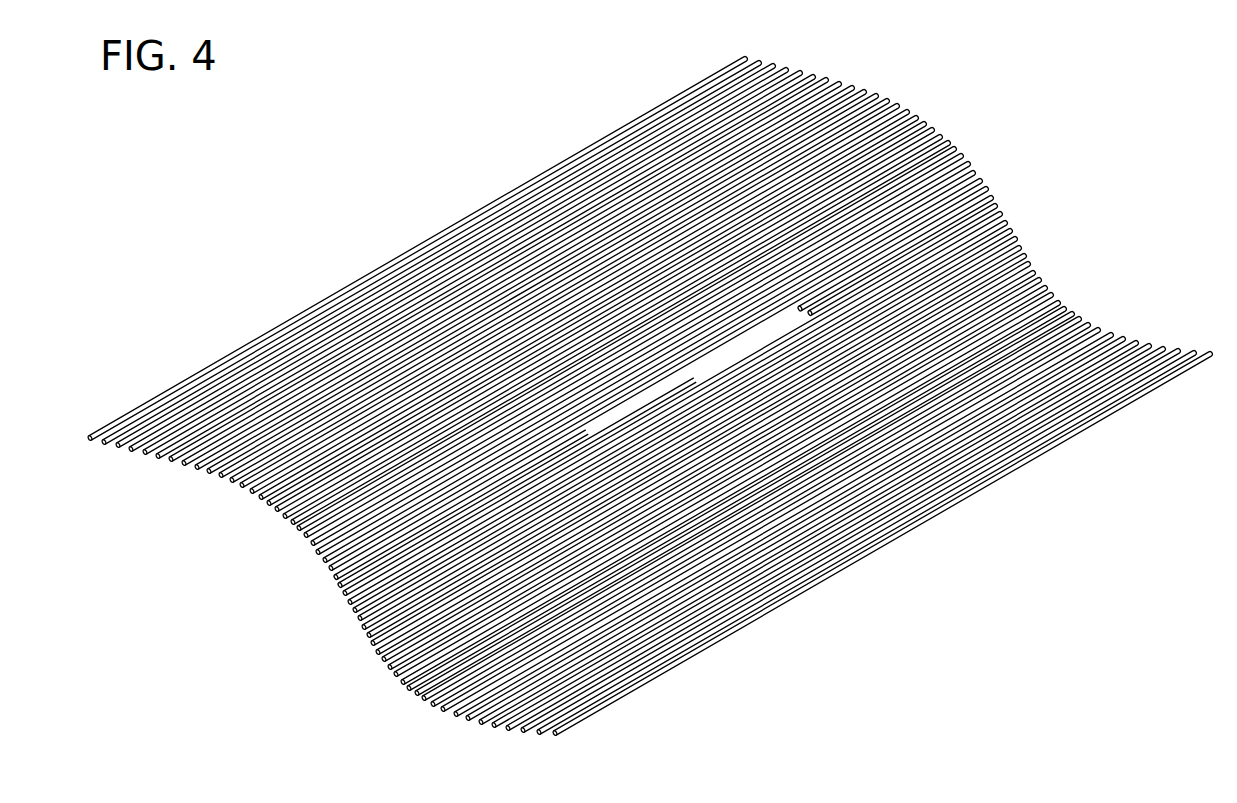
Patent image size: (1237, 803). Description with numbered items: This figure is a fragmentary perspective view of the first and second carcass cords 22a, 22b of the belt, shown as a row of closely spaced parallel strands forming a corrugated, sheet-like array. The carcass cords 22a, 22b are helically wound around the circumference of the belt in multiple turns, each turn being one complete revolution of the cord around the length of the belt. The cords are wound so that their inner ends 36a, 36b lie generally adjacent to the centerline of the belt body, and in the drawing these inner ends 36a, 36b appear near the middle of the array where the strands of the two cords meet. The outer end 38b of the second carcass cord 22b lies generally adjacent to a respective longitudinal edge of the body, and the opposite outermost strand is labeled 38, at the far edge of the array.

The first carcass cord 22a is at (403, 690).
The second carcass cord 22b is at (258, 497).
The inner end of first carcass cord 36a is at (815, 298).
The inner end of second carcass cord 36b is at (828, 300).
The rod 38 is at (742, 624).
The outer end of second carcass cord 38b is at (255, 342).